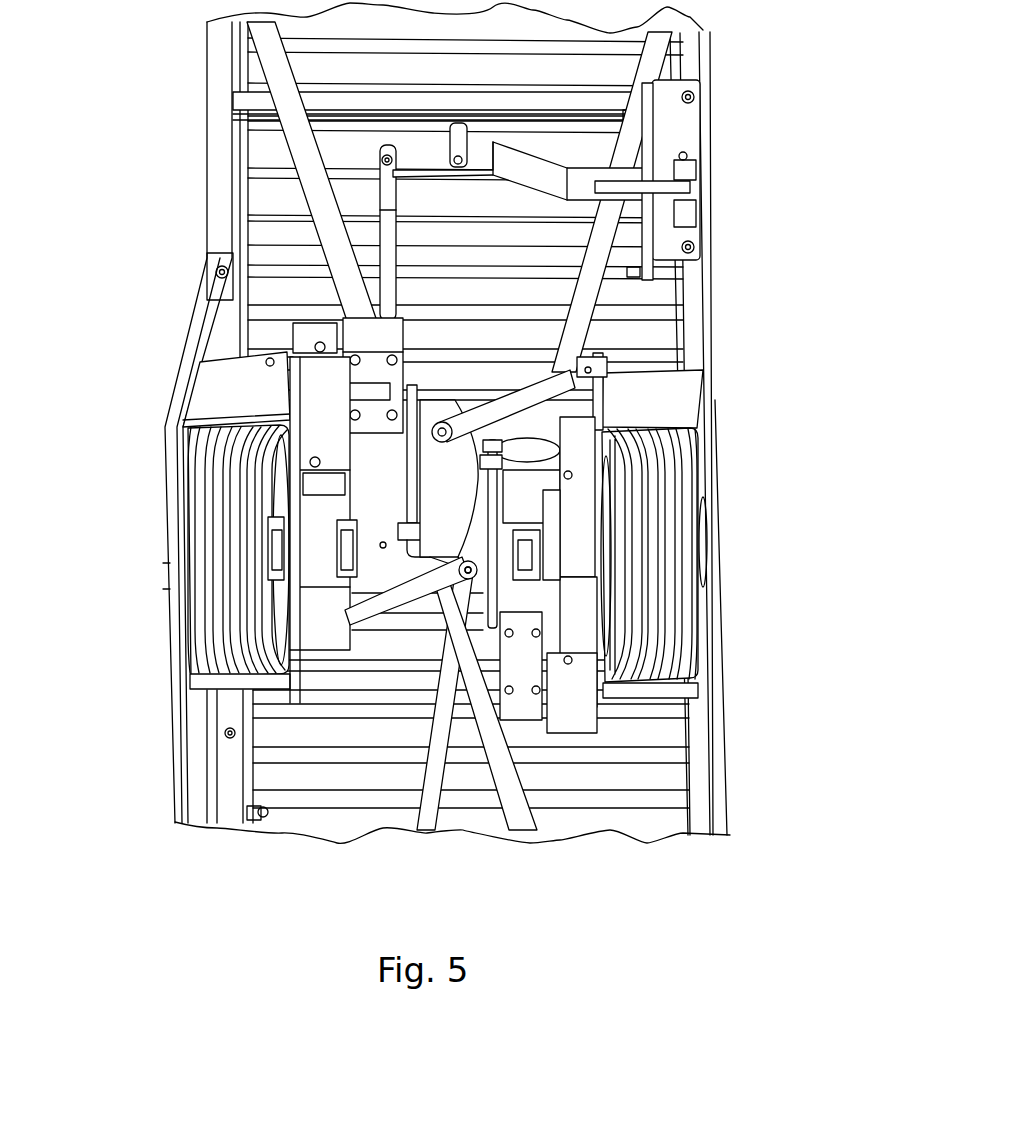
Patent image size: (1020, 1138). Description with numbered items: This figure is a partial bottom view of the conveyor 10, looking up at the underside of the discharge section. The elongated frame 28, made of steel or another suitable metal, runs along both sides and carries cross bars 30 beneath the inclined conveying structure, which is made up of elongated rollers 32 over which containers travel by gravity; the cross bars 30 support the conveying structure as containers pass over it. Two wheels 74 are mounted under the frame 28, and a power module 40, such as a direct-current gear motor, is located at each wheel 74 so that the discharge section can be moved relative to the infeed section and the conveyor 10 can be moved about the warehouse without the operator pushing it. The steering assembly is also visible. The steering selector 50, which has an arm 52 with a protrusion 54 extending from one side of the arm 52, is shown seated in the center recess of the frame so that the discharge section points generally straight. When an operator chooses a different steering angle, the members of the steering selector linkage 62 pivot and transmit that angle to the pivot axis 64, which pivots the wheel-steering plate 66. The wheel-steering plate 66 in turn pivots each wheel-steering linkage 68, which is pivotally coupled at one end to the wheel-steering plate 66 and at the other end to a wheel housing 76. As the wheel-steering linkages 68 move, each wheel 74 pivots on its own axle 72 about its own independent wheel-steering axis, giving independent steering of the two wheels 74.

The conveyor 10 is at (108, 70).
The frame 28 is at (207, 83).
The cross bars 30 is at (313, 180).
The elongated rollers 32 is at (262, 162).
The power module 40 is at (353, 446).
The steering selector 50 is at (698, 195).
The arm 52 is at (665, 178).
The protrusion 54 is at (665, 192).
The steering selector linkage 62 is at (387, 216).
The pivot axis 64 is at (425, 490).
The wheel-steering plate 66 is at (240, 363).
The wheel-steering linkage 68 is at (360, 614).
The axle 72 is at (475, 557).
The wheel 74 is at (200, 452).
The wheel housing 76 is at (212, 400).